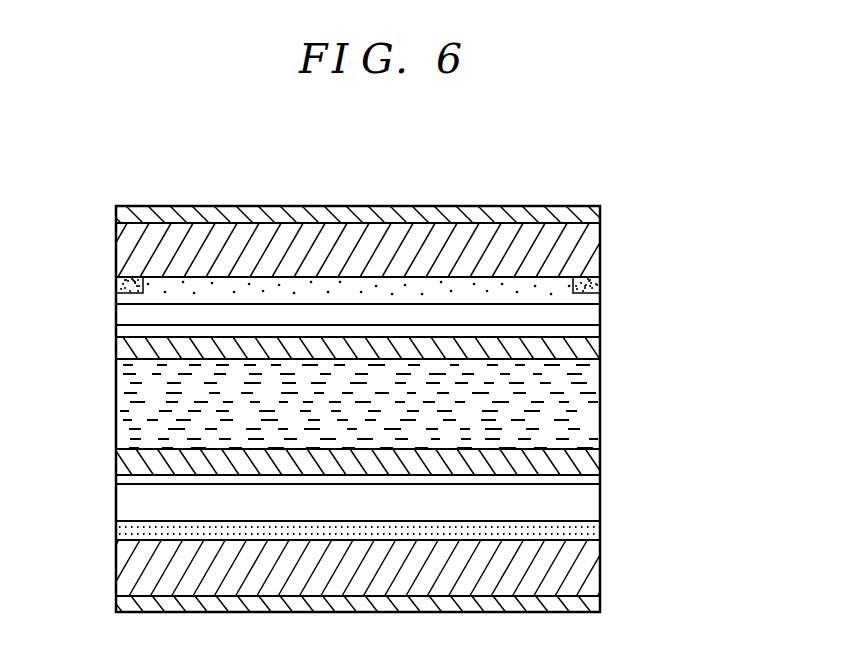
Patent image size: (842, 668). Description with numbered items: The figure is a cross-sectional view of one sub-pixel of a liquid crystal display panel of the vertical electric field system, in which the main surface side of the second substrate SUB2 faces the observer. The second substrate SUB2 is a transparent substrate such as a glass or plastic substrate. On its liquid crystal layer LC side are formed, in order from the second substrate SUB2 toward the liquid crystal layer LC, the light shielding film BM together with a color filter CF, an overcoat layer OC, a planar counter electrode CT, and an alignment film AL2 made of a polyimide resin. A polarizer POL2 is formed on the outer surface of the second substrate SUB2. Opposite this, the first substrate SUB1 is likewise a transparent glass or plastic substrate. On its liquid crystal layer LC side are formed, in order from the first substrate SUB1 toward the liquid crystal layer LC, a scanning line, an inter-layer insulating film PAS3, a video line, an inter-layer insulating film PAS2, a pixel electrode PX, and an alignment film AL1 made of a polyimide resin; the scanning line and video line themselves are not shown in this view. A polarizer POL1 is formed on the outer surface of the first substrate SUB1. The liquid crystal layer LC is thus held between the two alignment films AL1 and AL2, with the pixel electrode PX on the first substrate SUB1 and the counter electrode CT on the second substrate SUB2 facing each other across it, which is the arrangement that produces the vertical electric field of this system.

The polarizer POL2 is at (600, 215).
The second substrate SUB2 is at (600, 258).
The color filter CF is at (355, 294).
The light shielding film BM is at (118, 288).
The overcoat layer OC is at (603, 312).
The counter electrode CT is at (125, 330).
The alignment film AL2 is at (600, 350).
The liquid crystal layer LC is at (125, 395).
The alignment film AL1 is at (600, 460).
The pixel electrode PX is at (121, 481).
The inter-layer insulating film PAS2 is at (125, 500).
The inter-layer insulating film PAS3 is at (600, 531).
The first substrate SUB1 is at (600, 567).
The polarizer POL1 is at (600, 604).